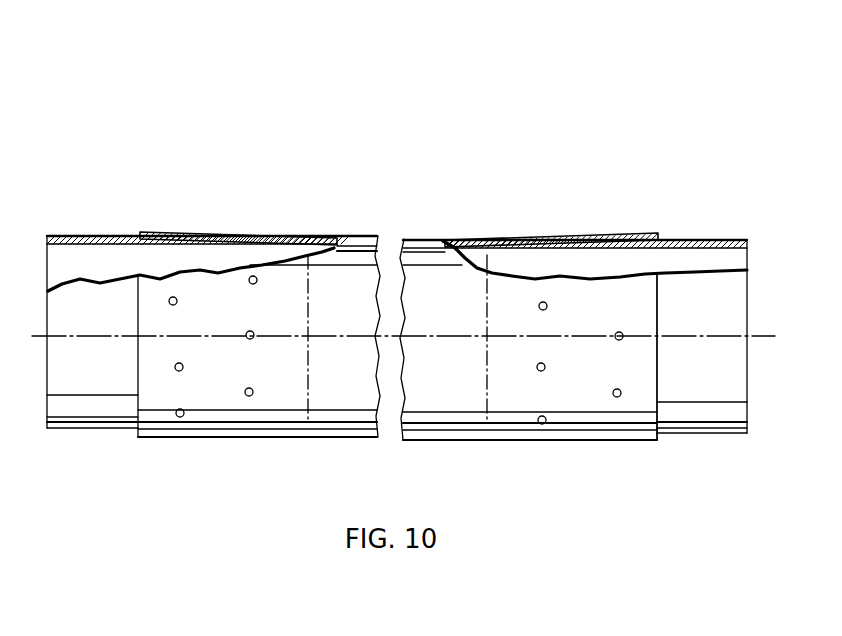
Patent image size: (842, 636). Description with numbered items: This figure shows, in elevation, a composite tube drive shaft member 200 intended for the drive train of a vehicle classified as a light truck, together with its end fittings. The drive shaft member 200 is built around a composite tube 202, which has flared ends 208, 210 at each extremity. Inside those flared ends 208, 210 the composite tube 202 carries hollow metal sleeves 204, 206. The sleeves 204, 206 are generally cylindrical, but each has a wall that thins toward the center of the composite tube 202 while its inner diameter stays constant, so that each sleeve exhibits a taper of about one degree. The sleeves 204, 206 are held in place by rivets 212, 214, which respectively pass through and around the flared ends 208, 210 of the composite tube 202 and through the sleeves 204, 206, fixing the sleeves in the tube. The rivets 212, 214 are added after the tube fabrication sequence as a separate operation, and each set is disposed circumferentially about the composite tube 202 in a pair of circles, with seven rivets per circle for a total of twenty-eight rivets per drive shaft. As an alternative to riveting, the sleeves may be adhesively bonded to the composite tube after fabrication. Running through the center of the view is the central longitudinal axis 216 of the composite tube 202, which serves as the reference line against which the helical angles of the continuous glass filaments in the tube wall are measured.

The composite tube drive shaft member 200 is at (338, 108).
The composite tube 202 is at (418, 238).
The hollow metal sleeve 204 is at (97, 236).
The hollow metal sleeve 206 is at (710, 240).
The flared end 208 is at (197, 232).
The flared end 210 is at (575, 235).
The rivets 212 is at (251, 284).
The rivets 214 is at (545, 310).
The central longitudinal axis 216 is at (705, 337).